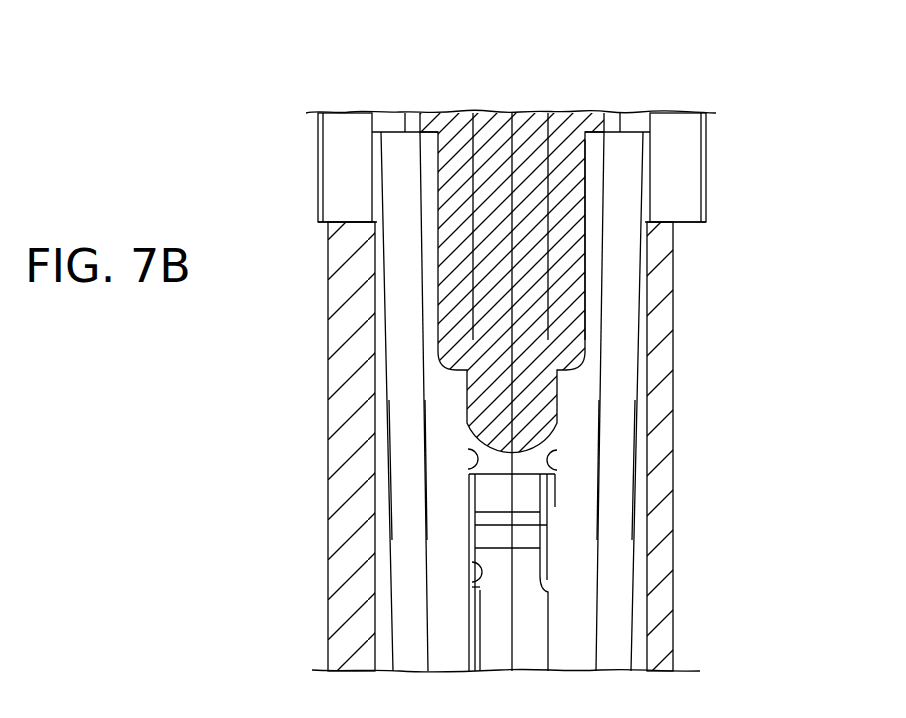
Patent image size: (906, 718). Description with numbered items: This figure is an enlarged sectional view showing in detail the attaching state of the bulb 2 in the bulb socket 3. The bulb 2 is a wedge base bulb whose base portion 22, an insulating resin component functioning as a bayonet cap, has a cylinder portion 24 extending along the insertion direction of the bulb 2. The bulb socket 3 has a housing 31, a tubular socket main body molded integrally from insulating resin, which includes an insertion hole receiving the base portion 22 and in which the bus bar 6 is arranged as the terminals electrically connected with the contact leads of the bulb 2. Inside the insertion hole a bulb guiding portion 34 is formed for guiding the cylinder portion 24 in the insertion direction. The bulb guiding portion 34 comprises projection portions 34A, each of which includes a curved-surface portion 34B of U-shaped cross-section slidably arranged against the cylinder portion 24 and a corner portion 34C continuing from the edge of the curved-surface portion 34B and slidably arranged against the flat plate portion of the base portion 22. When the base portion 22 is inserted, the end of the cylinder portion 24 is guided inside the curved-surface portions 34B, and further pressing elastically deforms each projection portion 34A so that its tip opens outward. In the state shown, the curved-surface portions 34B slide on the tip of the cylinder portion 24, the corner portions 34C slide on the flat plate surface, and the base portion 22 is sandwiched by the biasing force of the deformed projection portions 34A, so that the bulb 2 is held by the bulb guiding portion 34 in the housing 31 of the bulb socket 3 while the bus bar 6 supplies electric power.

The bulb 2 is at (543, 103).
The base portion 22 is at (490, 112).
The cylinder portion 24 is at (586, 178).
The bulb socket 3 is at (305, 140).
The housing 31 is at (318, 173).
The bulb guiding portion 34 is at (636, 262).
The projection portion 34A is at (400, 306).
The curved-surface portion 34B is at (442, 412).
The corner portion 34C is at (468, 472).
The bus bar 6 is at (522, 618).